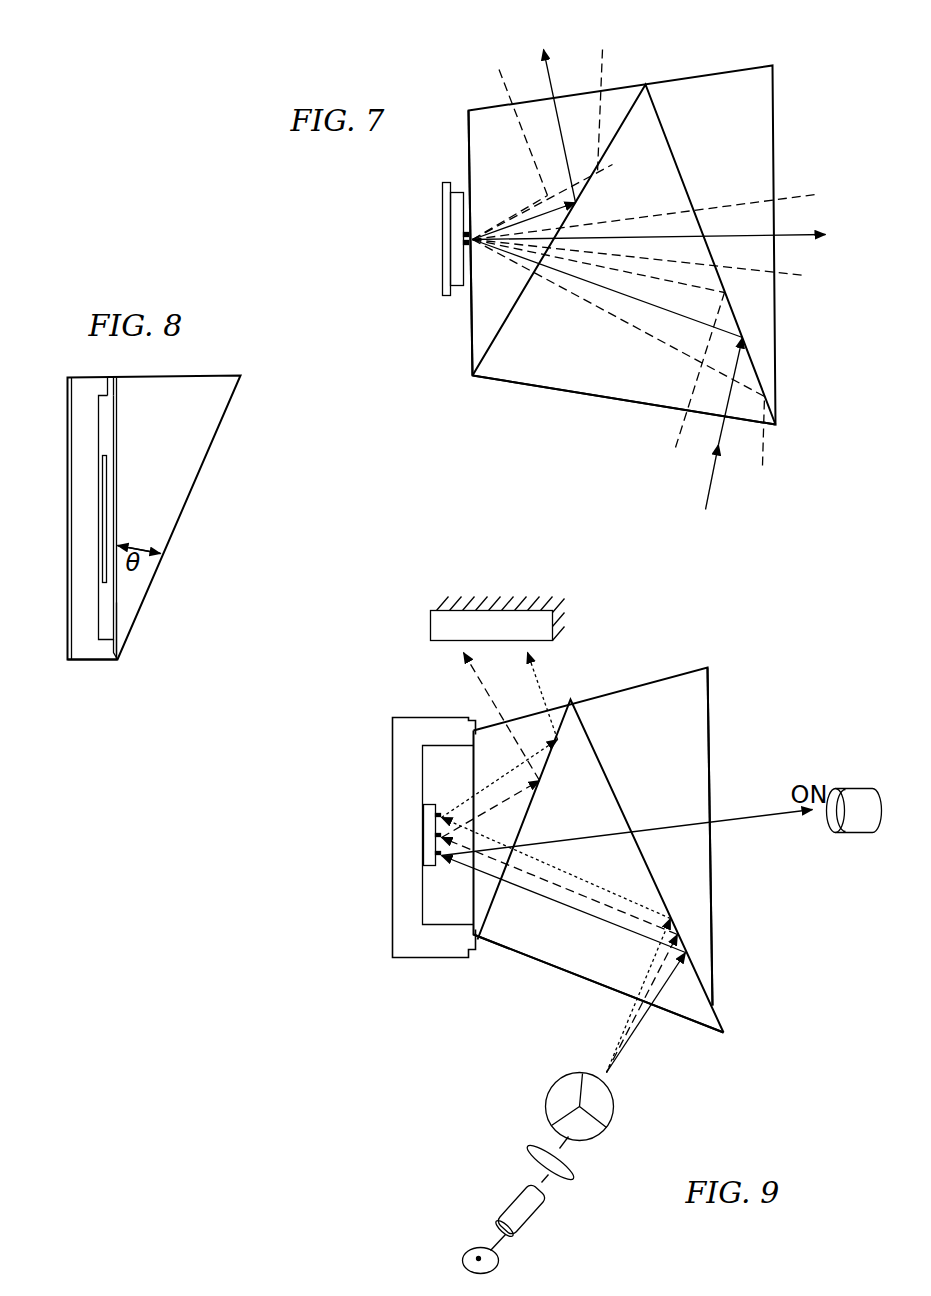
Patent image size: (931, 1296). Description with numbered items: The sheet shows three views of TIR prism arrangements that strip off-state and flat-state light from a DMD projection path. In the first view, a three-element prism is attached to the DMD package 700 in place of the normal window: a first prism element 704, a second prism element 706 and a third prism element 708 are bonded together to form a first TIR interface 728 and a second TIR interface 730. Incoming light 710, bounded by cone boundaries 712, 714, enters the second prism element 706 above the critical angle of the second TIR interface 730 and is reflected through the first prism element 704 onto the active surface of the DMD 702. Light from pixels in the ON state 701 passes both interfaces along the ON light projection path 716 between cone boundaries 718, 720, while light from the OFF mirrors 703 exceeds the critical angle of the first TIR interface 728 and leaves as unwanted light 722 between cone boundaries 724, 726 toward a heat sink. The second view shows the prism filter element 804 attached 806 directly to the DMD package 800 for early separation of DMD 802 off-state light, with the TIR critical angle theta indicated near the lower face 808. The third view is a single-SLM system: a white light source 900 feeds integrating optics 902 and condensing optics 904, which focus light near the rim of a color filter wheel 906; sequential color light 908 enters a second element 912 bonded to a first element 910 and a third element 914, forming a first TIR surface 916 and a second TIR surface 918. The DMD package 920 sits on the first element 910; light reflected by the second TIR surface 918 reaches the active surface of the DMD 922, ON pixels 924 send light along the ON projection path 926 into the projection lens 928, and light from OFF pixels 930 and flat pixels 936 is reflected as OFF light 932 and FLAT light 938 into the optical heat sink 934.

In FIG. 7, the DMD package 700 is at (442, 278).
In FIG. 7, the ON state pixels 701 is at (463, 240).
In FIG. 7, the active surface of the DMD 702 is at (455, 190).
In FIG. 7, the OFF mirrors 703 is at (463, 232).
In FIG. 7, the first prism element 704 is at (468, 325).
In FIG. 7, the second prism element 706 is at (540, 387).
In FIG. 7, the third prism element 708 is at (718, 62).
In FIG. 7, the incoming light 710 is at (712, 487).
In FIG. 7, the cone boundary 712 is at (680, 423).
In FIG. 7, the cone boundary 714 is at (765, 440).
In FIG. 7, the ON light projection path 716 is at (805, 238).
In FIG. 7, the cone boundary 718 is at (792, 193).
In FIG. 7, the cone boundary 720 is at (806, 278).
In FIG. 7, the unwanted light 722 is at (552, 67).
In FIG. 7, the cone boundary 724 is at (493, 63).
In FIG. 7, the cone boundary 726 is at (606, 50).
In FIG. 7, the first TIR interface 728 is at (585, 180).
In FIG. 7, the second TIR interface 730 is at (752, 343).
In FIG. 8, the DMD package 800 is at (95, 660).
In FIG. 8, the DMD 802 is at (110, 497).
In FIG. 8, the prism filter element 804 is at (205, 464).
In FIG. 8, the attachment 806 is at (113, 385).
In FIG. 8, the lower face portion 808 is at (127, 618).
In FIG. 9, the white light source 900 is at (478, 1243).
In FIG. 9, the integrating optics 902 is at (520, 1197).
In FIG. 9, the condensing optics 904 is at (555, 1180).
In FIG. 9, the color filter wheel 906 is at (615, 1110).
In FIG. 9, the sequential color light 908 is at (635, 1040).
In FIG. 9, the first prism element 910 is at (488, 727).
In FIG. 9, the second prism element 912 is at (545, 975).
In FIG. 9, the third prism element 914 is at (709, 707).
In FIG. 9, the first TIR surface 916 is at (540, 760).
In FIG. 9, the second TIR surface 918 is at (685, 937).
In FIG. 9, the DMD package 920 is at (392, 755).
In FIG. 9, the active surface of the DMD 922 is at (425, 870).
In FIG. 9, the ON pixels 924 is at (445, 870).
In FIG. 9, the ON projection path 926 is at (752, 815).
In FIG. 9, the projection lens 928 is at (853, 795).
In FIG. 9, the OFF pixels 930 is at (440, 808).
In FIG. 9, the OFF light 932 is at (532, 667).
In FIG. 9, the optical heat sink 934 is at (430, 620).
In FIG. 9, the flat pixels 936 is at (437, 832).
In FIG. 9, the FLAT light 938 is at (488, 690).